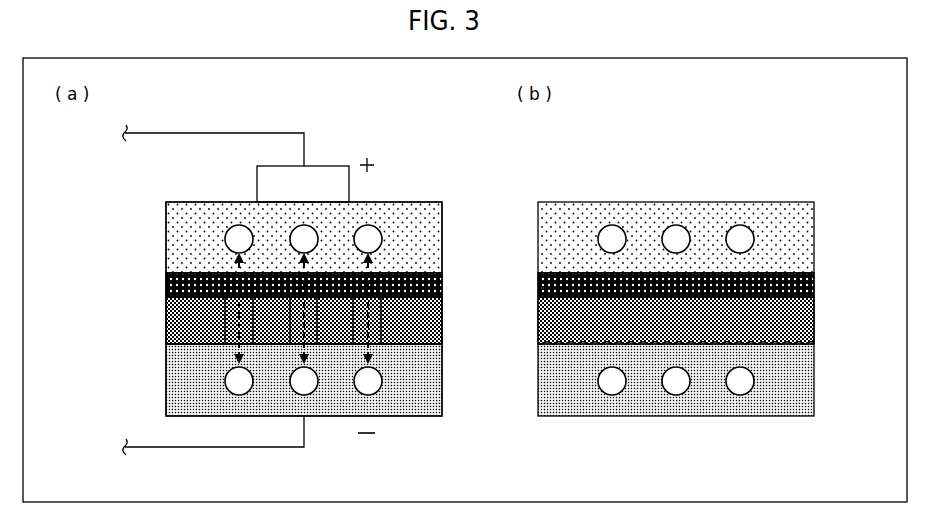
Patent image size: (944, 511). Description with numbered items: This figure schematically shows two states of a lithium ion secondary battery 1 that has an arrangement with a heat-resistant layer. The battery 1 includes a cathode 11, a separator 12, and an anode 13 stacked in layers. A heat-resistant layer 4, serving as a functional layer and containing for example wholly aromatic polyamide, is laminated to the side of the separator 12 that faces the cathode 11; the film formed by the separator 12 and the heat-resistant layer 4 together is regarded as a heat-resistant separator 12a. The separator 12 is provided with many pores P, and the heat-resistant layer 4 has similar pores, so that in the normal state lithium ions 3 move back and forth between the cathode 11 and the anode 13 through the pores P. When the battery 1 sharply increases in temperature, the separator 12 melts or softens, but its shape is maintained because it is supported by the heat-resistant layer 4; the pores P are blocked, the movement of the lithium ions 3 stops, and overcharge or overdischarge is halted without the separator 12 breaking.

The lithium ion secondary battery 1 is at (72, 202).
The cathode 11 is at (167, 240).
The separator 12 is at (168, 324).
The heat-resistant separator 12a is at (121, 275).
The heat-resistant layer 4 is at (167, 288).
The anode 13 is at (168, 379).
The lithium ions 3 is at (241, 229).
The pores P is at (247, 298).